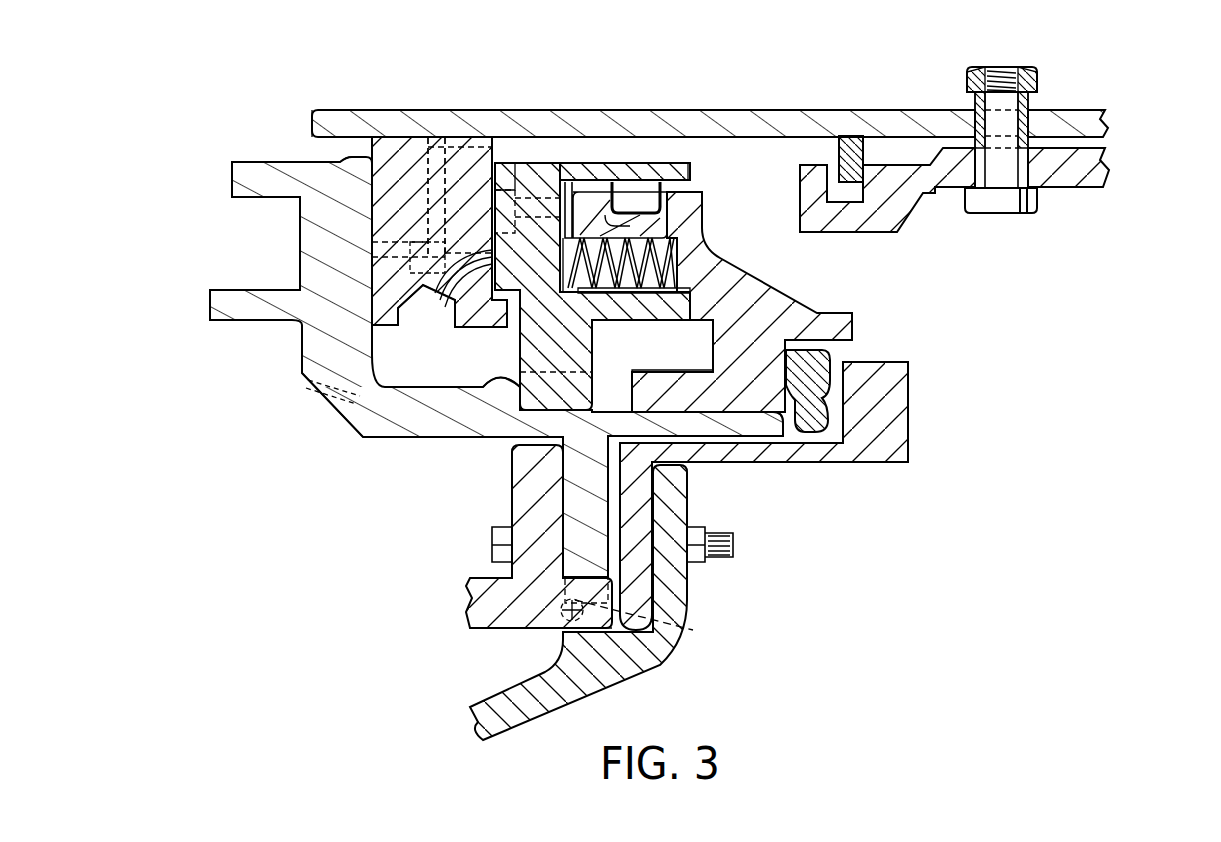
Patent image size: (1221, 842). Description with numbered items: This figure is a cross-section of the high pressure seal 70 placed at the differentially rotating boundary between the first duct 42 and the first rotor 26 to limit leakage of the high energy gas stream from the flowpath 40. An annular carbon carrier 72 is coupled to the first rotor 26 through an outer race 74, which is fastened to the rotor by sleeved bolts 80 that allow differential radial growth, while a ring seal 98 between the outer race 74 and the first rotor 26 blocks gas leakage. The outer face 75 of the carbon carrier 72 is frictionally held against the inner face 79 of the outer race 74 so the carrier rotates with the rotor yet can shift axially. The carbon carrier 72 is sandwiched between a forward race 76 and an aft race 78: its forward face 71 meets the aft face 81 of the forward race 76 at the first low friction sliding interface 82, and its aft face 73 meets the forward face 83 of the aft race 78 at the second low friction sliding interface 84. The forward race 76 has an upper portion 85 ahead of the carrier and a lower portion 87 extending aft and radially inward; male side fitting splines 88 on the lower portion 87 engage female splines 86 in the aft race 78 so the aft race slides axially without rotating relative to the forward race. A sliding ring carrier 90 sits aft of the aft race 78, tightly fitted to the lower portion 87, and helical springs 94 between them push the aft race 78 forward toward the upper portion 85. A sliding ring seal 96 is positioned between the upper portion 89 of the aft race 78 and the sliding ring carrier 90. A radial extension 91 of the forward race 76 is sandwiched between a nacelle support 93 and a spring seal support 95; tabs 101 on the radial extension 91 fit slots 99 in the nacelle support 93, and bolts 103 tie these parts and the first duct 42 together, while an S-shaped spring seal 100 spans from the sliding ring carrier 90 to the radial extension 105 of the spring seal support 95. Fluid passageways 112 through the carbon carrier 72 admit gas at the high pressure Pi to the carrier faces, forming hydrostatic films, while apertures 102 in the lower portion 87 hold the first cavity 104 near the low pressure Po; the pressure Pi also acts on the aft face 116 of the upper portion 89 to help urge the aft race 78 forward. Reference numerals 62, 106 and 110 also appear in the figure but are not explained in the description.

The first rotor 26 is at (1082, 186).
The high pressure gas flowpath 40 is at (1196, 507).
The first duct 42 is at (478, 712).
The assembly 62 is at (249, 30).
The high pressure seal 70 is at (371, 62).
The forward face of the carbon carrier 71 is at (360, 137).
The carbon carrier 72 is at (409, 224).
The aft face of the carbon carrier 73 is at (518, 130).
The outer race 74 is at (553, 125).
The outer face of the carbon carrier 75 is at (398, 137).
The forward race 76 is at (302, 347).
The aft race 78 is at (561, 364).
The inner face of the outer race 79 is at (578, 137).
The sleeved bolts 80 is at (1000, 182).
The aft face of the forward race 81 is at (305, 375).
The first low friction sliding interface 82 is at (345, 162).
The forward face of the aft race 83 is at (440, 300).
The second low friction sliding interface 84 is at (455, 330).
The upper portion of the forward race 85 is at (322, 250).
The female splines 86 is at (477, 430).
The lower portion of the forward race 87 is at (720, 425).
The male side fitting splines 88 is at (500, 393).
The upper portion of the aft race 89 is at (600, 170).
The sliding ring carrier 90 is at (775, 303).
The radial extension of the forward race 91 is at (535, 510).
The nacelle support 93 is at (488, 585).
The helical springs 94 is at (560, 165).
The spring seal support 95 is at (815, 462).
The sliding ring seal 96 is at (645, 190).
The ring seal 98 is at (845, 170).
The slots 99 is at (566, 614).
The S-shaped spring seal 100 is at (825, 365).
The tabs 101 is at (693, 630).
The apertures 102 is at (330, 388).
The bolts 103 is at (492, 532).
The first cavity 104 is at (422, 364).
The radial extension of the spring seal support 105 is at (905, 428).
The chamber 106 is at (648, 359).
The passage 110 is at (472, 175).
The fluid passageways 112 is at (410, 263).
The aft face of the upper portion of the aft race 116 is at (690, 172).
The high pressure region pressure Pi is at (746, 227).
The low pressure region pressure Po is at (282, 412).